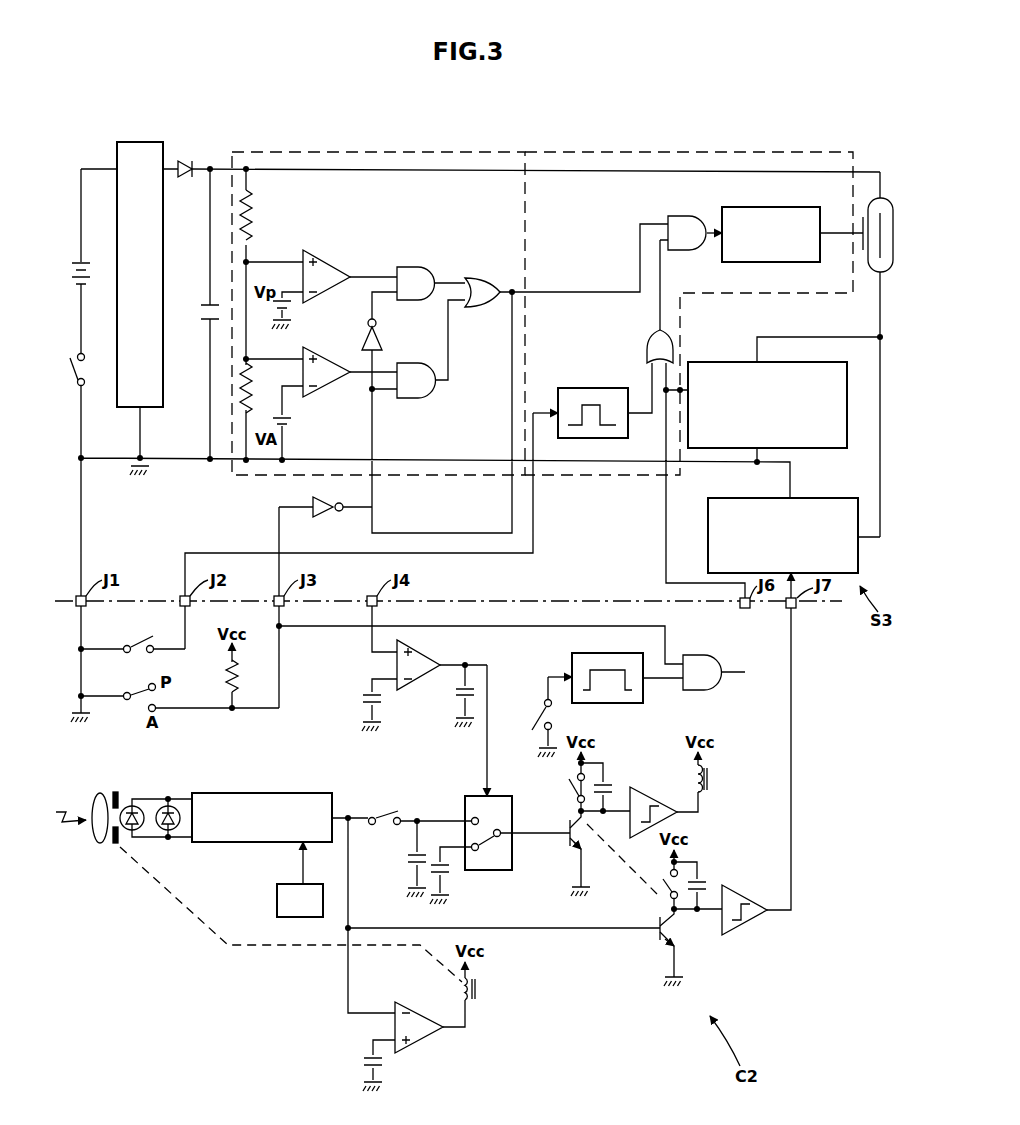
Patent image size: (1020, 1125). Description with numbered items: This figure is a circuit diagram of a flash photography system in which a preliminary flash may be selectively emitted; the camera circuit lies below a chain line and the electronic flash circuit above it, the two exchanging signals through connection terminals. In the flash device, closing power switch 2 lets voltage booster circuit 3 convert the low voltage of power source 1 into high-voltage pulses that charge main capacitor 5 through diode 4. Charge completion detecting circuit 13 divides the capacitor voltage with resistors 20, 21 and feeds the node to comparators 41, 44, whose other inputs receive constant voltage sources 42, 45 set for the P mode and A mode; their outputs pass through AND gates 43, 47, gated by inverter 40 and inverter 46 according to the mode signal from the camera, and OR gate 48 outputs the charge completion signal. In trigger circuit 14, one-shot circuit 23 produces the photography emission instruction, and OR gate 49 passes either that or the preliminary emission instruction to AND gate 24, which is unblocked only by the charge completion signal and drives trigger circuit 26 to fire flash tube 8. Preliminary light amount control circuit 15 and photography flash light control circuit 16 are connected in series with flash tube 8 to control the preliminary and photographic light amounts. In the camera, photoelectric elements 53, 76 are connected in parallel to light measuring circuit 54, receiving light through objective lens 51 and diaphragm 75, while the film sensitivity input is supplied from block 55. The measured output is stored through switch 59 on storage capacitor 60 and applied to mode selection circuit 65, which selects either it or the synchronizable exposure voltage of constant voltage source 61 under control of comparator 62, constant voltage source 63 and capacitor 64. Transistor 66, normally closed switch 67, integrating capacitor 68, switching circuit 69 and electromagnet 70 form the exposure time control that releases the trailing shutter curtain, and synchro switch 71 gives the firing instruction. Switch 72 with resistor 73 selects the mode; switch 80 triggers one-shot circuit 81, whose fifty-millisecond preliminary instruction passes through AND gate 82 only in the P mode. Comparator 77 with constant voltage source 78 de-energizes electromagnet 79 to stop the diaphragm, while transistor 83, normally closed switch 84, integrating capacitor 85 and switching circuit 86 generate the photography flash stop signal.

The power source 1 is at (76, 287).
The power switch 2 is at (77, 387).
The voltage booster circuit 3 is at (163, 405).
The diode 4 is at (186, 160).
The main capacitor 5 is at (203, 320).
The flash tube 8 is at (888, 200).
The charge completion detecting circuit 13 is at (320, 152).
The trigger circuit 14 is at (660, 155).
The preliminary light amount control circuit 15 is at (718, 362).
The photography flash light control circuit 16 is at (835, 498).
The voltage divider resistor 20 is at (252, 217).
The voltage divider resistor 21 is at (251, 396).
The one-shot circuit 23 is at (588, 388).
The AND gate 24 is at (686, 216).
The trigger circuit 26 is at (768, 207).
The inverter 40 is at (330, 515).
The comparator 41 is at (336, 260).
The constant voltage source 42 is at (290, 310).
The AND gate 43 is at (425, 267).
The comparator 44 is at (328, 390).
The constant voltage source 45 is at (291, 423).
The inverter 46 is at (380, 338).
The AND gate 47 is at (425, 398).
The OR gate 48 is at (490, 310).
The OR gate 49 is at (648, 342).
The objective lens 51 is at (98, 794).
The photoelectric element 53 is at (133, 805).
The light measuring circuit 54 is at (305, 793).
The film sensitivity setting circuit 55 is at (316, 884).
The normally open switch 59 is at (386, 812).
The storage capacitor 60 is at (412, 862).
The constant voltage source 61 is at (445, 878).
The comparator 62 is at (411, 690).
The constant voltage source 63 is at (370, 692).
The capacitor 64 is at (460, 700).
The mode selection circuit 65 is at (500, 870).
The logarithmic expansion transistor 66 is at (572, 846).
The normally closed switch 67 is at (574, 793).
The integrating capacitor 68 is at (608, 786).
The switching circuit 69 is at (662, 800).
The electromagnet 70 is at (712, 782).
The normally open switch 71 is at (142, 642).
The switch 72 is at (126, 692).
The resistor 73 is at (236, 672).
The diaphragm 75 is at (117, 845).
The photoelectric element 76 is at (169, 805).
The comparator 77 is at (425, 1045).
The constant voltage source 78 is at (384, 1070).
The electromagnet 79 is at (480, 988).
The normally open switch 80 is at (536, 718).
The one-shot circuit 81 is at (636, 703).
The AND gate 82 is at (703, 655).
The transistor 83 is at (658, 944).
The normally closed switch 84 is at (669, 878).
The integrating capacitor 85 is at (704, 882).
The switching circuit 86 is at (760, 920).